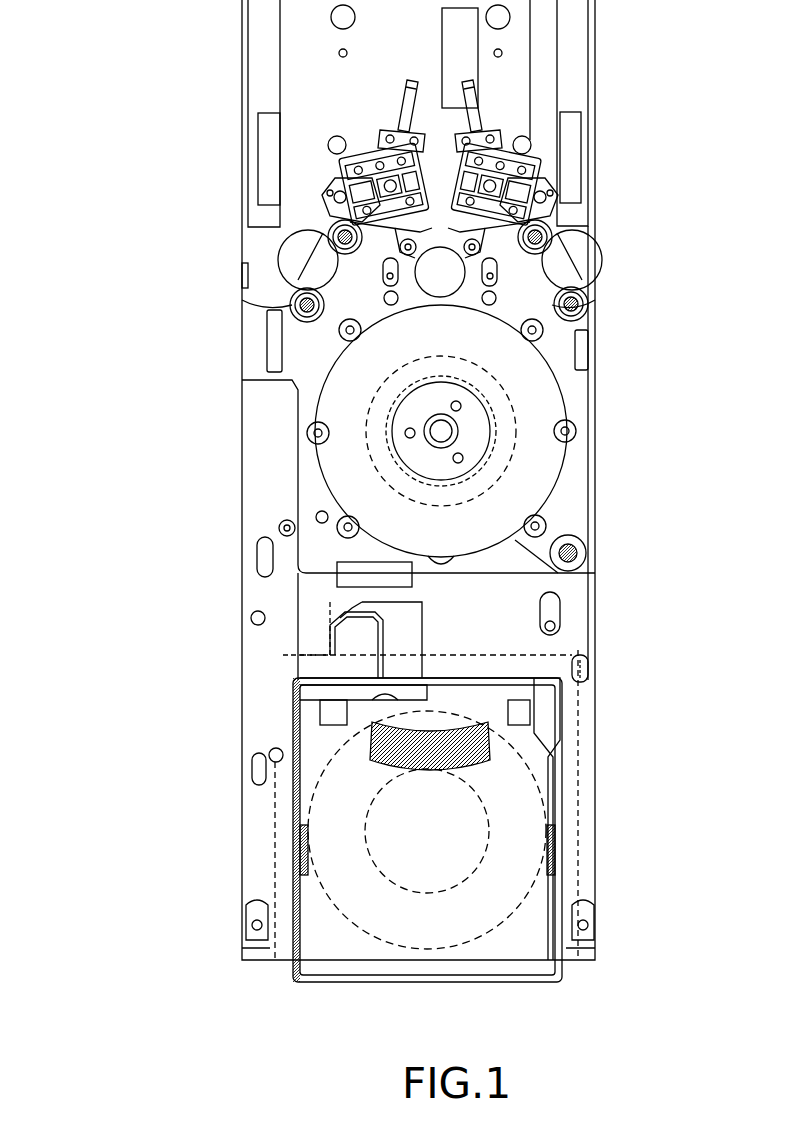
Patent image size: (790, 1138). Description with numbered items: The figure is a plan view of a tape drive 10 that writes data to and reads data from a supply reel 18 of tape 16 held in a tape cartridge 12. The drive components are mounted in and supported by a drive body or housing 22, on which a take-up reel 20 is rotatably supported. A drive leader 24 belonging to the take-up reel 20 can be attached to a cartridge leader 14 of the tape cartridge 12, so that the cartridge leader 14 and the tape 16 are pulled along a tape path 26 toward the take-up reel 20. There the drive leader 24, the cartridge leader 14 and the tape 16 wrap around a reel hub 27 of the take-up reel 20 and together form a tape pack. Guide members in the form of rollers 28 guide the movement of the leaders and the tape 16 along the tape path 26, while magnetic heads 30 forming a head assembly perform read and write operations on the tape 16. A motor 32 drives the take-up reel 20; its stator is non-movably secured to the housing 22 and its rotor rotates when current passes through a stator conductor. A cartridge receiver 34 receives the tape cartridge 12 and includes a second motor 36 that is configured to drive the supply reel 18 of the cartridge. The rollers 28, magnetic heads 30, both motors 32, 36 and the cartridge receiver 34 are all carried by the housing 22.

The tape drive 10 is at (153, 540).
The tape cartridge 12 is at (503, 982).
The cartridge leader 14 is at (283, 655).
The tape 16 is at (482, 745).
The supply reel 18 is at (556, 757).
The take-up reel 20 is at (565, 405).
The housing 22 is at (240, 357).
The drive leader 24 is at (298, 577).
The tape path 26 is at (288, 612).
The reel hub 27 is at (490, 405).
The rollers 28 is at (296, 305).
The magnetic heads 30 is at (352, 170).
The motor 32 is at (505, 450).
The cartridge receiver 34 is at (575, 650).
The motor 36 is at (490, 827).